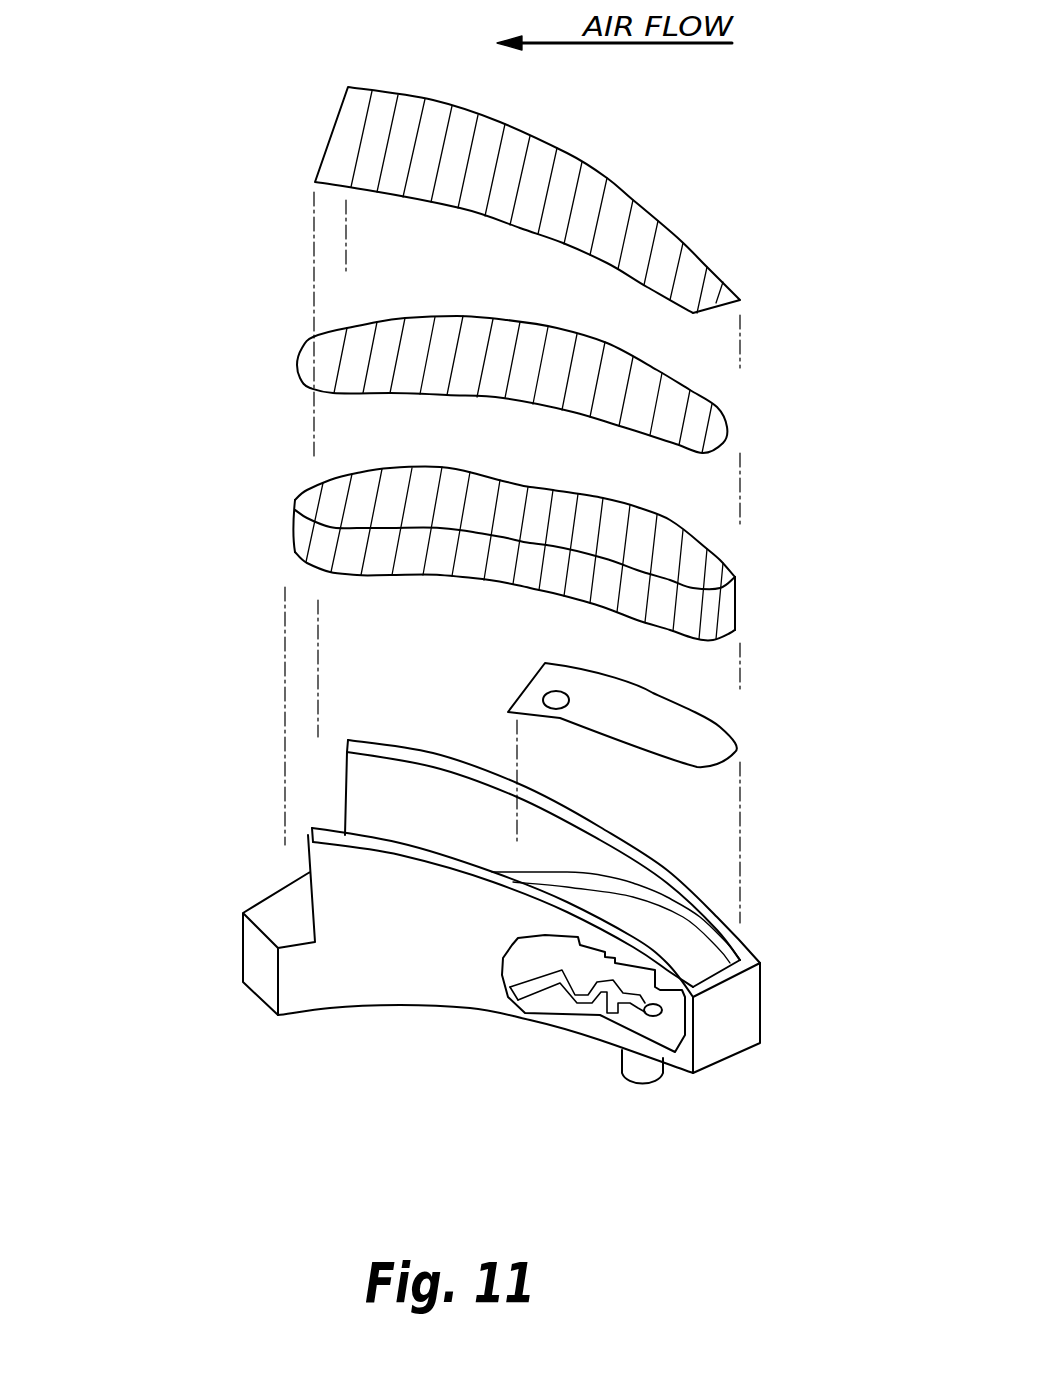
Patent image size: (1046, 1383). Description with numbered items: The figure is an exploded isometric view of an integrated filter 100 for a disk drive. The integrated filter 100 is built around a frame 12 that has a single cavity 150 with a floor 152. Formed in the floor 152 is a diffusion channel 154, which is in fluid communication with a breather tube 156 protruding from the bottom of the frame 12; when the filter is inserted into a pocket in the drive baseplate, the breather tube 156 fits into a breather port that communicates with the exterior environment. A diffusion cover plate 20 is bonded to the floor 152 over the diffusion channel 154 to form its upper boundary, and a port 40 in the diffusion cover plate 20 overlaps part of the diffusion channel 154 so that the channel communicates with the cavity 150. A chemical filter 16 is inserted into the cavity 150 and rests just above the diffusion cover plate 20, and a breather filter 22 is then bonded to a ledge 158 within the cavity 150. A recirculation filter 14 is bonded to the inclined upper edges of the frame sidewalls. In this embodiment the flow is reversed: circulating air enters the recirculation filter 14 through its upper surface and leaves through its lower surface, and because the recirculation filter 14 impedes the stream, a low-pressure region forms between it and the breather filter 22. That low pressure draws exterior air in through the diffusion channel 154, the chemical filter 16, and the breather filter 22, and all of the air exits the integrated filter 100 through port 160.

The integrated filter 100 is at (215, 263).
The recirculation filter 14 is at (690, 260).
The breather filter 22 is at (700, 413).
The chemical filter 16 is at (695, 558).
The diffusion cover plate 20 is at (682, 730).
The port 40 is at (548, 690).
The port 160 is at (263, 805).
The frame 12 is at (743, 1005).
The cavity 150 is at (658, 938).
The ledge 158 is at (600, 880).
The floor 152 is at (667, 1033).
The diffusion channel 154 is at (577, 1005).
The breather tube 156 is at (650, 1083).